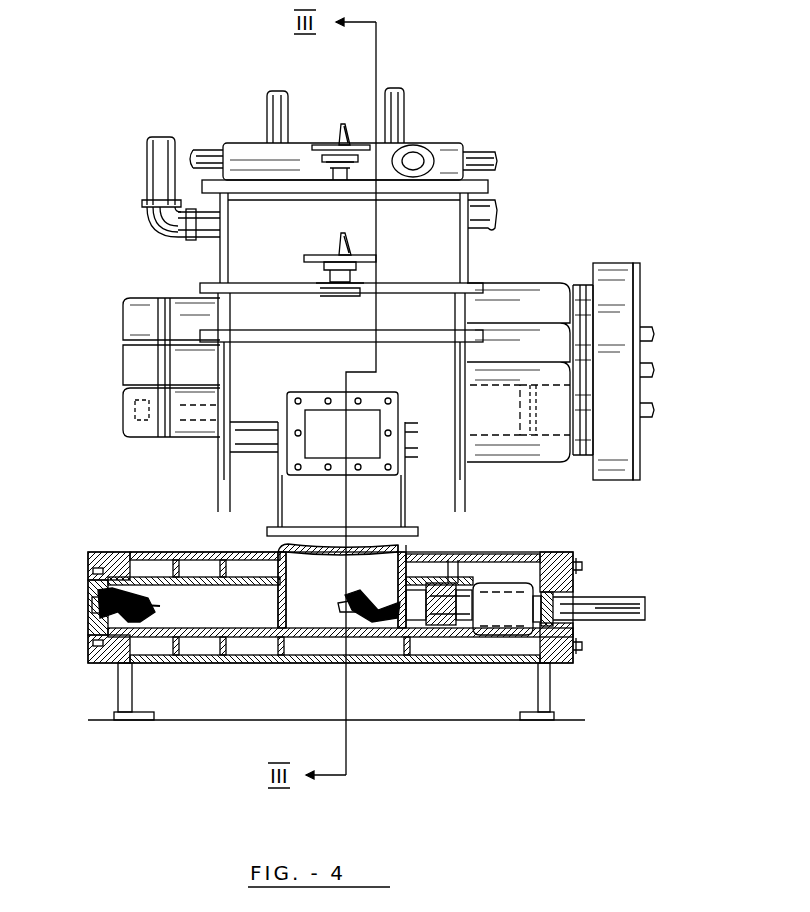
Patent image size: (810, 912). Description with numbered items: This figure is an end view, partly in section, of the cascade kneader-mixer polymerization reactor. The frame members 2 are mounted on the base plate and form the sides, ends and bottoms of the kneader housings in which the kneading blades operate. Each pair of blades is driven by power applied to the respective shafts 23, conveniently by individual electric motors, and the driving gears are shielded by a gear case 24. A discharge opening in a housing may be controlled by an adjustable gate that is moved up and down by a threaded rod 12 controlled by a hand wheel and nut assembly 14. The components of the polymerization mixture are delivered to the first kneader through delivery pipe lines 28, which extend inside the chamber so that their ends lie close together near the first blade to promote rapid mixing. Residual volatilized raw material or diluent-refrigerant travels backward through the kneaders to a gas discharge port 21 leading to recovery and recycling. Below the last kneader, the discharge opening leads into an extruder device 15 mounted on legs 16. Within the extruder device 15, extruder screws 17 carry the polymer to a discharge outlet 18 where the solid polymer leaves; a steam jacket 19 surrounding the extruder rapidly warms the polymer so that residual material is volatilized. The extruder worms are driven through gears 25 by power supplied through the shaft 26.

The frame member 2 is at (466, 244).
The threaded rod 12 is at (344, 124).
The hand wheel and nut assembly 14 is at (346, 136).
The extruder device 15 is at (540, 554).
The leg 16 is at (118, 693).
The extruder screw 17 is at (145, 605).
The discharge outlet 18 is at (90, 608).
The steam jacket 19 is at (208, 556).
The gas discharge port 21 is at (210, 242).
The shaft 23 is at (656, 330).
The gear case 24 is at (612, 263).
The gear 25 is at (493, 636).
The shaft 26 is at (612, 598).
The delivery pipe line 28 is at (267, 113).